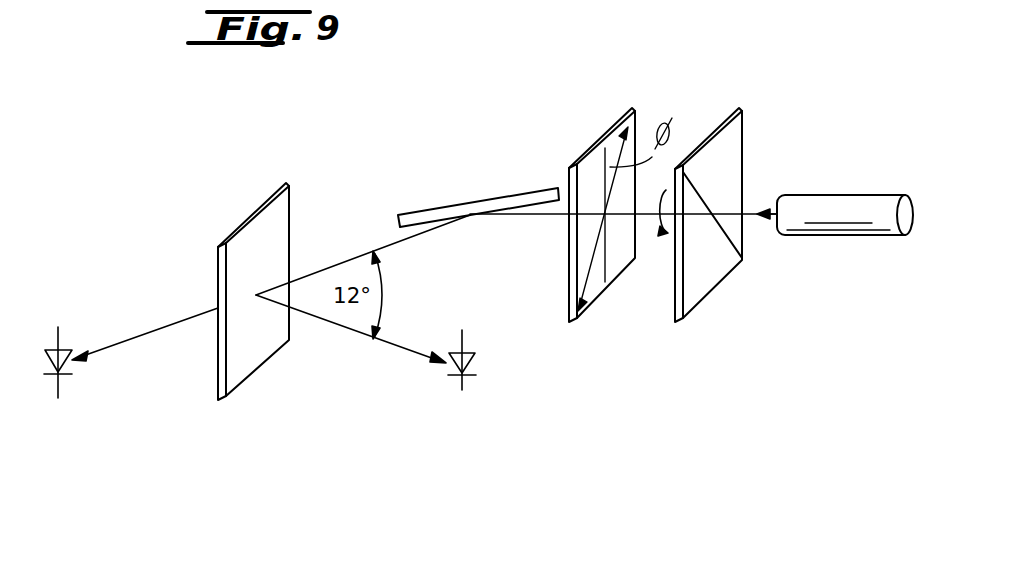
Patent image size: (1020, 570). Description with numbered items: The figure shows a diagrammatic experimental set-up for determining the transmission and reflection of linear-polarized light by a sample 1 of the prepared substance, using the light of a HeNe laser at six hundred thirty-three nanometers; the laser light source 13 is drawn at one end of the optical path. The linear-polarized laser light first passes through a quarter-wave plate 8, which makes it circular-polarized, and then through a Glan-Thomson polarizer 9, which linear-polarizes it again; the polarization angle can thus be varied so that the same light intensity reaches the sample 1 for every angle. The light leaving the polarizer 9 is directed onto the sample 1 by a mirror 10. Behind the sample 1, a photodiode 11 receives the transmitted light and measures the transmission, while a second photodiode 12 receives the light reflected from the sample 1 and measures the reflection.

The sample 1 is at (247, 222).
The quarter-wave plate 8 is at (720, 120).
The Glan-Thomson polarizer 9 is at (590, 142).
The mirror 10 is at (443, 216).
The photodiode 11 is at (60, 350).
The photodiode 12 is at (470, 358).
The light source 13 is at (833, 205).